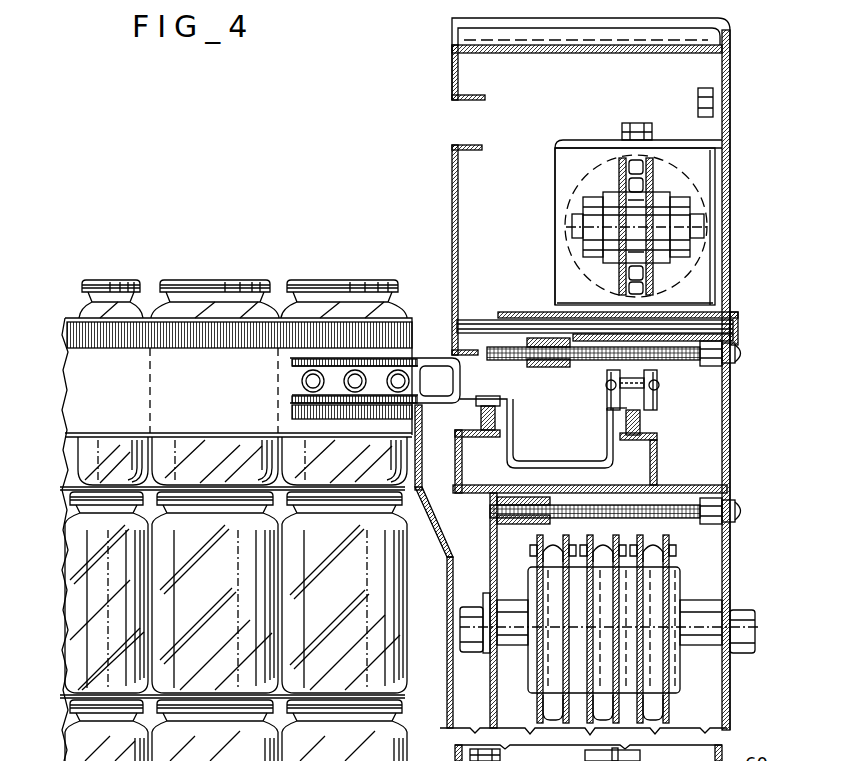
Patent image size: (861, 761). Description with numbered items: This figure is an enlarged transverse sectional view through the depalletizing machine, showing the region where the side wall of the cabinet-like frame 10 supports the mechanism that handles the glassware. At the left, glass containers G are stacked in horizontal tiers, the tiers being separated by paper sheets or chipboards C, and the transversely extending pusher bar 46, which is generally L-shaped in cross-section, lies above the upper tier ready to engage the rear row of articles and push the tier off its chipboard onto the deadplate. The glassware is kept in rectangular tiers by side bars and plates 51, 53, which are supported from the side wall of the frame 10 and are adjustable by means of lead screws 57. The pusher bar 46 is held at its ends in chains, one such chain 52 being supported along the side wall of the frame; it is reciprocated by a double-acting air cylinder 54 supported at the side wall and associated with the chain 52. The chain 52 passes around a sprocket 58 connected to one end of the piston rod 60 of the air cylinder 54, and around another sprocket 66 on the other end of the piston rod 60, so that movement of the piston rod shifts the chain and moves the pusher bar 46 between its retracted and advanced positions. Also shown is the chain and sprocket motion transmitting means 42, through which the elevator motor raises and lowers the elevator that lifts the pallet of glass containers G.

The cabinet-like frame 10 is at (742, 125).
The side bar 51 is at (452, 194).
The chain 52 is at (617, 165).
The double-acting air cylinder 54 is at (567, 181).
The sprocket 58 is at (632, 209).
The piston rod 60 is at (583, 240).
The lead screw 57 is at (742, 357).
The side plate 53 is at (422, 455).
The pusher bar 46 is at (226, 397).
The chain and sprocket motion transmitting means 42 is at (692, 552).
The sprocket 66 is at (586, 760).
The glass container G is at (104, 280).
The chipboard C is at (70, 473).